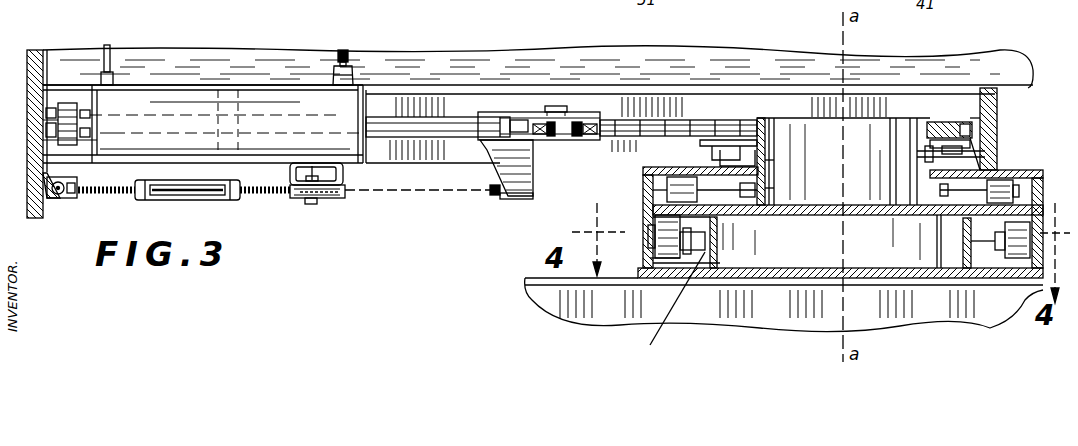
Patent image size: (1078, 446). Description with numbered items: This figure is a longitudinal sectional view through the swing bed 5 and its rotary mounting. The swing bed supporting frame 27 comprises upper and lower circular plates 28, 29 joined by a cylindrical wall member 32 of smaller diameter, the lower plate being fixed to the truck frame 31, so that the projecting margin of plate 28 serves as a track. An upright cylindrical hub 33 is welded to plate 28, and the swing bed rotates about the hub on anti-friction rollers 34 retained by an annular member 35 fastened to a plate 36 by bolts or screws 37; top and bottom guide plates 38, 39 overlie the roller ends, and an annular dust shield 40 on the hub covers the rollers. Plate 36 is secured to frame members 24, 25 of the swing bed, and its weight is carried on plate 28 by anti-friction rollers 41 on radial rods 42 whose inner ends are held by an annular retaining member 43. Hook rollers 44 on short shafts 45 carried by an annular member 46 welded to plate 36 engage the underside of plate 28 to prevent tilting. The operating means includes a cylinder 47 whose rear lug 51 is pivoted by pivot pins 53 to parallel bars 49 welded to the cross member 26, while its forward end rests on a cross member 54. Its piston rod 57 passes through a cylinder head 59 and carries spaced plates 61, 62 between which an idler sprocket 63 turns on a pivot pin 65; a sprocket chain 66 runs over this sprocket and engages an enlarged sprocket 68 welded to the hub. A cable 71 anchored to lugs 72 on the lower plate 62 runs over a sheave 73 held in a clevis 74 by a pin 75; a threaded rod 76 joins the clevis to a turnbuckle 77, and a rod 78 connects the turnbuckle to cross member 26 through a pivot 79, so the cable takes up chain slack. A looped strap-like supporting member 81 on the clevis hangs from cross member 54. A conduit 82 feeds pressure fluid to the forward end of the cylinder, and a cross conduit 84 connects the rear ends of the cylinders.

The swing bed 5 is at (706, 78).
The side frame member 24 is at (468, 85).
The frame member 25 is at (990, 92).
The cross member 26 is at (35, 216).
The swing bed supporting frame 27 is at (671, 307).
The upper circular plate 28 is at (855, 206).
The lower circular plate 29 is at (885, 268).
The truck frame 31 is at (560, 300).
The cylindrical wall member 32 is at (753, 238).
The upright cylindrical hub 33 is at (920, 138).
The anti-friction rollers 34 is at (762, 160).
The annular member 35 is at (968, 150).
The plate 36 is at (1005, 170).
The bolts or screws 37 is at (985, 128).
The top guide plate 38 is at (943, 122).
The bottom guide plate 39 is at (928, 208).
The annular dust shield 40 is at (718, 142).
The anti-friction rollers 41 is at (667, 196).
The radial supporting pins or rods 42 is at (648, 184).
The annular retaining member 43 is at (765, 188).
The hook rollers 44 is at (660, 228).
The short shafts 45 is at (704, 242).
The annular member 46 is at (655, 254).
The cylinder 47 is at (233, 122).
The vertically spaced parallel bars 49 is at (88, 135).
The lug 51 is at (43, 120).
The pivot pins 53 is at (67, 102).
The cross member 54 is at (312, 166).
The piston rod or ram 57 is at (418, 120).
The cylinder heads 59 is at (364, 100).
The plate 61 is at (505, 117).
The plate 62 is at (490, 150).
The idler sprocket 63 is at (568, 128).
The pivot pins 65 is at (556, 106).
The sprocket chain 66 is at (650, 118).
The enlarged sprocket 68 is at (743, 124).
The cable 71 is at (420, 195).
The lugs 72 is at (518, 199).
The sheave 73 is at (325, 198).
The clevis 74 is at (300, 198).
The pin 75 is at (322, 204).
The threaded rod 76 is at (256, 195).
The turnbuckle 77 is at (220, 180).
The rod 78 is at (124, 196).
The pivot 79 is at (60, 198).
The looped strap-like supporting member 81 is at (345, 175).
The conduit 82 is at (350, 57).
The cross conduit 84 is at (112, 58).